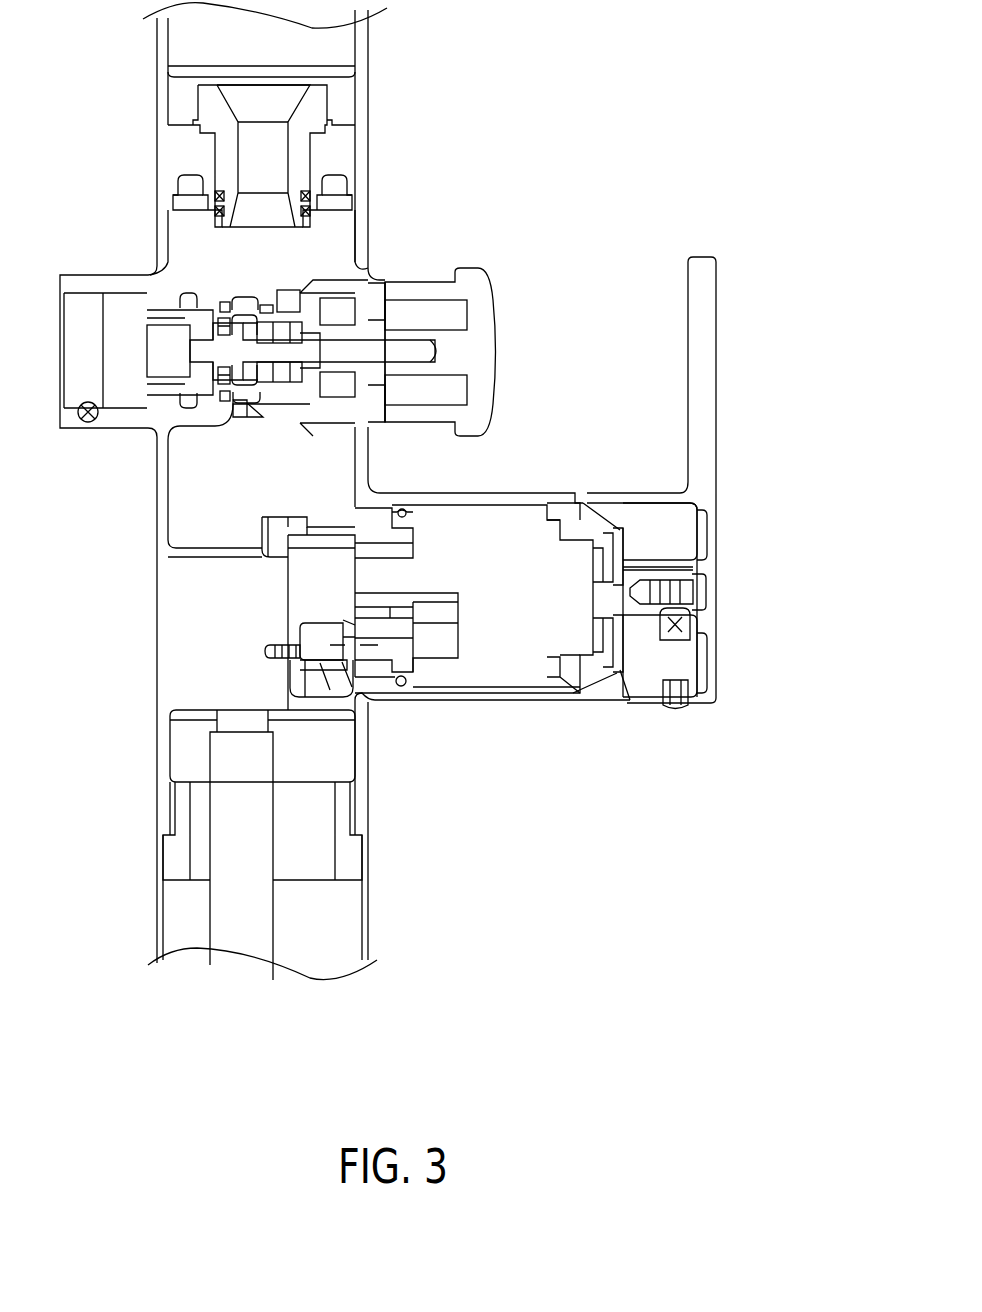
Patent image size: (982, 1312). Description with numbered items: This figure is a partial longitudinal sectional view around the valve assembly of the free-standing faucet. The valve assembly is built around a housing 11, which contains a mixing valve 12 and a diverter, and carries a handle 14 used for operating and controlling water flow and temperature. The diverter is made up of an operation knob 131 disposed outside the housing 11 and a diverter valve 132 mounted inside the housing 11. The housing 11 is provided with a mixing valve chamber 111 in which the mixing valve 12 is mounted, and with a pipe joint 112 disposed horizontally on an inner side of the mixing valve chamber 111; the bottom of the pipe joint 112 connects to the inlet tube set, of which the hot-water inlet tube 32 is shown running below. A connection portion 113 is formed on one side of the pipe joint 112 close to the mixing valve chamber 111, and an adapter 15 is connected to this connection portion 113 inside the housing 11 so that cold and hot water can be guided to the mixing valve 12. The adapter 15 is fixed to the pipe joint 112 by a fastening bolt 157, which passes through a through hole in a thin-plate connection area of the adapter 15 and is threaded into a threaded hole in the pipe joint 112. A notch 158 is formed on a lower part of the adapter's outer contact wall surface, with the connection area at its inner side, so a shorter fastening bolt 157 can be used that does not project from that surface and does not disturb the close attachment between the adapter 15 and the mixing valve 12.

The housing 11 is at (163, 514).
The mixing valve 12 is at (507, 662).
The handle 14 is at (718, 420).
The adapter 15 is at (297, 603).
The hot-water inlet tube 32 is at (227, 912).
The mixing valve chamber 111 is at (490, 517).
The pipe joint 112 is at (180, 632).
The connection portion 113 is at (305, 545).
The operation knob 131 is at (496, 353).
The diverter valve 132 is at (203, 410).
The fastening bolt 157 is at (266, 650).
The notch 158 is at (358, 645).